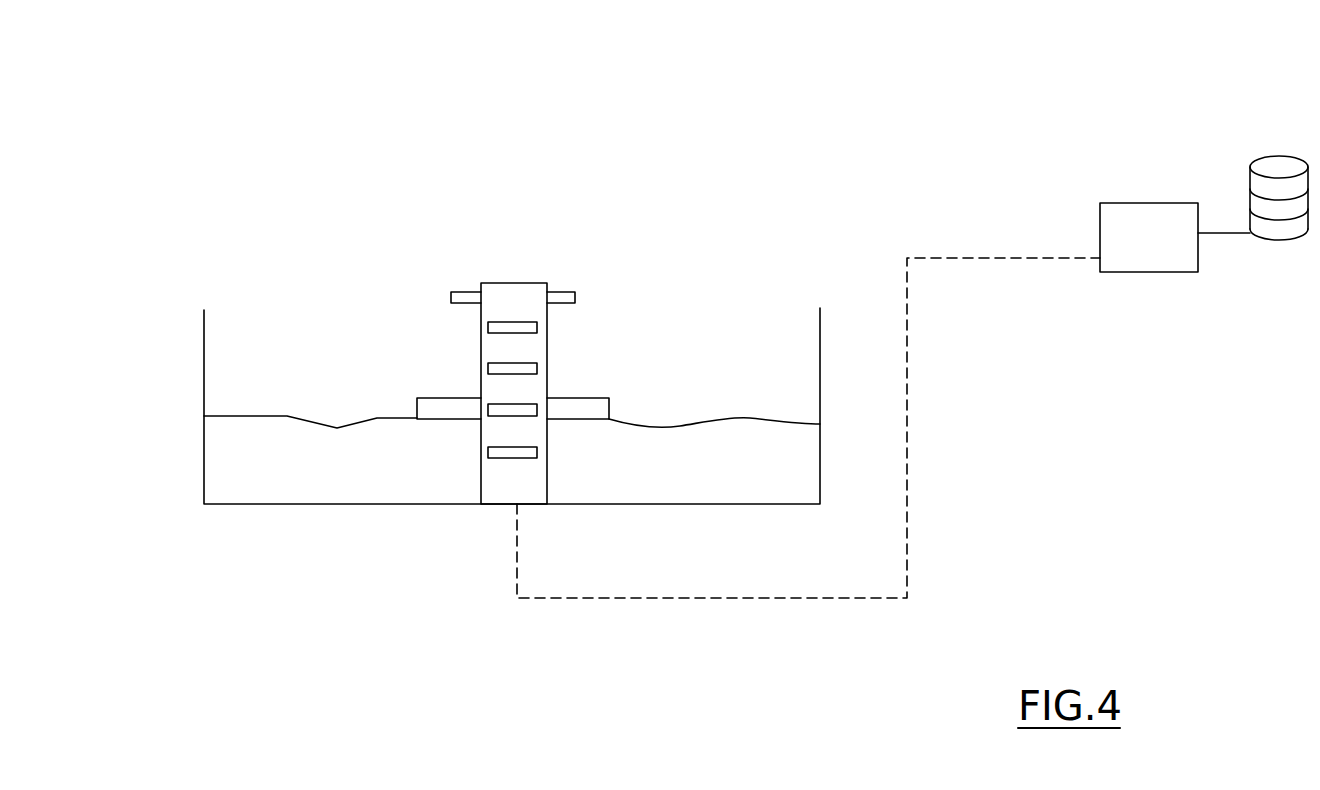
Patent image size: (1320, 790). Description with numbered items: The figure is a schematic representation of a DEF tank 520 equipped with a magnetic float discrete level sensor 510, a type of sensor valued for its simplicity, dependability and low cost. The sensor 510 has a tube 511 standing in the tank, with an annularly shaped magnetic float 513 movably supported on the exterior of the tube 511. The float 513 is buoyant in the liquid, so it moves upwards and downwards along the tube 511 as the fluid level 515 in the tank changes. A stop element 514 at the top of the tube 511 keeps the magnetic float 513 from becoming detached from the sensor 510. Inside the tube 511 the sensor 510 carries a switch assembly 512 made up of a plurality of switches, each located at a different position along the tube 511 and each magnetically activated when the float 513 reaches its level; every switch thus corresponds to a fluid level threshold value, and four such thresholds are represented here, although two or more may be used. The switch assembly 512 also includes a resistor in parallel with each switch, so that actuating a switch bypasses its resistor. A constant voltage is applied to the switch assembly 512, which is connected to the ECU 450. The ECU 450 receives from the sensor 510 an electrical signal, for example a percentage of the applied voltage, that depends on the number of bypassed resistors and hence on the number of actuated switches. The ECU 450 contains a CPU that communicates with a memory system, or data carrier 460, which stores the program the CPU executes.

The ECU 450 is at (1137, 203).
The data carrier 460 is at (1250, 165).
The sensor 510 is at (434, 223).
The tube 511 is at (530, 283).
The switch assembly 512 is at (537, 328).
The magnetic float 513 is at (432, 398).
The stop element 514 is at (460, 292).
The fluid level 515 is at (715, 422).
The DEF tank 520 is at (252, 223).